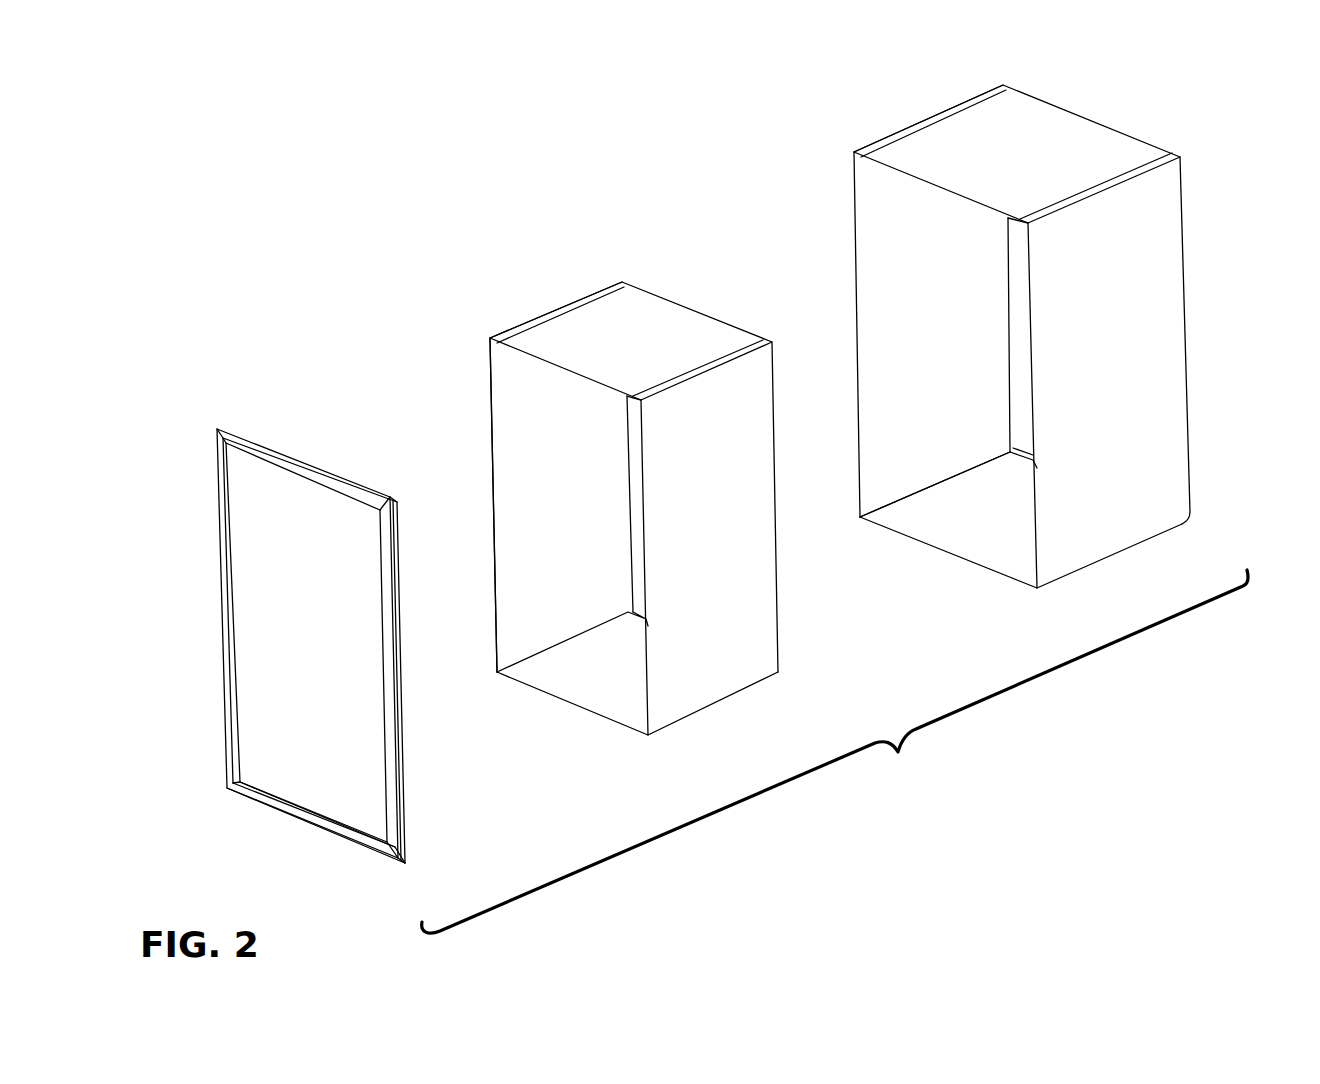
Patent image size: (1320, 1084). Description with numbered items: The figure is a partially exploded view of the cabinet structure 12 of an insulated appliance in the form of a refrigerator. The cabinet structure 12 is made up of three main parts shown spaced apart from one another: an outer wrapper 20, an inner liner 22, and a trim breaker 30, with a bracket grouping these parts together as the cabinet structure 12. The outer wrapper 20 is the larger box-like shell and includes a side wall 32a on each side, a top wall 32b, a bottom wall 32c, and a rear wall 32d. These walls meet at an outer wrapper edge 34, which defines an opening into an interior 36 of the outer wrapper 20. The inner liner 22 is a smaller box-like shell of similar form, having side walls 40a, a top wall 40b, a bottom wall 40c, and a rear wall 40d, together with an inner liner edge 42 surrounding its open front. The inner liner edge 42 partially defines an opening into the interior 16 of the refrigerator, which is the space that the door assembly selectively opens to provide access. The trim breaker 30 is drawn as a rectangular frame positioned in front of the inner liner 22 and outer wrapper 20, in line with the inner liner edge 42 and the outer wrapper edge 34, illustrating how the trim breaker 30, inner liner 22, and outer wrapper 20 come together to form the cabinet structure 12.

The cabinet structure 12 is at (835, 751).
The interior 16 is at (597, 494).
The outer wrapper 20 is at (1017, 347).
The inner liner 22 is at (573, 295).
The trim breaker 30 is at (268, 443).
The side wall 32a is at (903, 270).
The top wall 32b is at (1080, 143).
The bottom wall 32c is at (1015, 548).
The rear wall 32d is at (1026, 249).
The outer wrapper edge 34 is at (853, 193).
The interior 36 is at (966, 443).
The side wall 40a is at (507, 553).
The top wall 40b is at (662, 327).
The bottom wall 40c is at (592, 682).
The rear wall 40d is at (635, 432).
The inner liner edge 42 is at (488, 371).